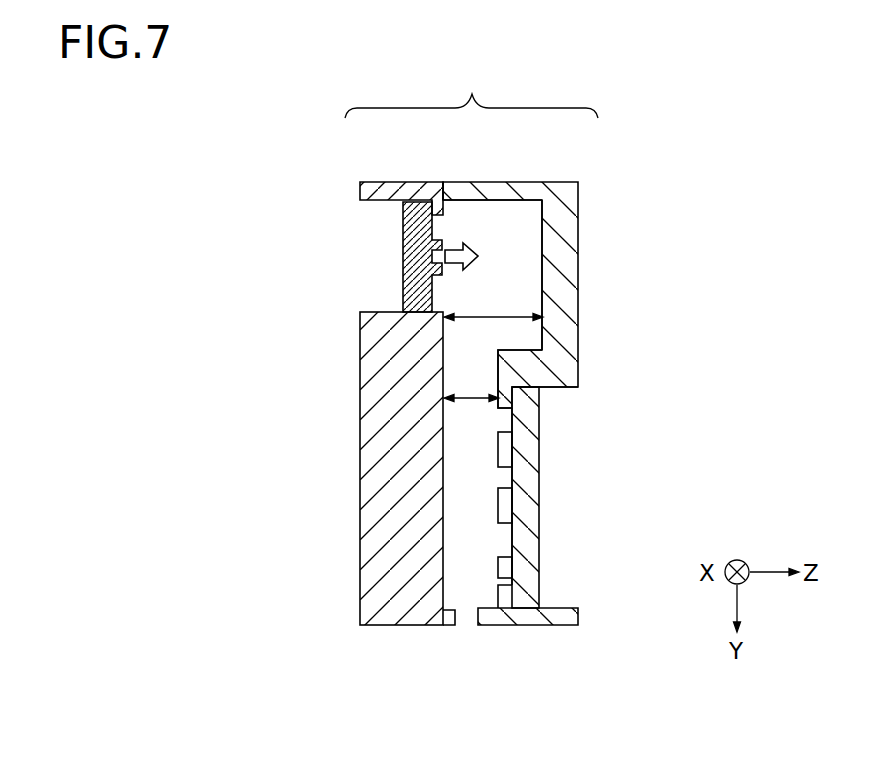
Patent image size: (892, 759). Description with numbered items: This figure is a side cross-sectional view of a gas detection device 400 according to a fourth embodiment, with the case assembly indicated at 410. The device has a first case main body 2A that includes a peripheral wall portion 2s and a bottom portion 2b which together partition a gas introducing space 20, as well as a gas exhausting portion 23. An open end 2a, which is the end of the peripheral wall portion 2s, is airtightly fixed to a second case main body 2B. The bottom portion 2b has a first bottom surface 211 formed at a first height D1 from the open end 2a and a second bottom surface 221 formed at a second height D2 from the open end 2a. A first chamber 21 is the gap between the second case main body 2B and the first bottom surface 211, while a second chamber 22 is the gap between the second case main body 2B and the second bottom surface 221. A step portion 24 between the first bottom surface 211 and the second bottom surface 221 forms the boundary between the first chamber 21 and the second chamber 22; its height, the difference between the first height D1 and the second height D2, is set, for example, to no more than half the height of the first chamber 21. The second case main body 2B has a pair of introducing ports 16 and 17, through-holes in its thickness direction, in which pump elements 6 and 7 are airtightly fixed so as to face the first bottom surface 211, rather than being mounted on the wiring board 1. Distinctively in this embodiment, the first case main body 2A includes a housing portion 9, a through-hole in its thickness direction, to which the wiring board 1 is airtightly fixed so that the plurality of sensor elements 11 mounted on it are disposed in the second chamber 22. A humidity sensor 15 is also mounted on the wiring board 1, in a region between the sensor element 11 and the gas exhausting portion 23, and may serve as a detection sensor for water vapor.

The gas detection device 400 is at (644, 114).
The cover member 410 is at (471, 92).
The second case main body 2B is at (400, 182).
The open end 2a is at (431, 183).
The first case main body 2A is at (517, 182).
The peripheral wall portion 2s is at (510, 295).
The bottom portion 2b is at (579, 296).
The first bottom surface 211 is at (540, 200).
The first chamber 21 is at (507, 285).
The step portion 24 is at (518, 348).
The second bottom surface 221 is at (498, 362).
The pump element 6 is at (403, 247).
The pump element 7 is at (422, 257).
The gas introducing space 20 is at (500, 237).
The introducing port 16 is at (370, 312).
The introducing port 17 is at (401, 468).
The gas exhausting portion 23 is at (458, 619).
The wiring board 1 is at (538, 430).
The second chamber 22 is at (487, 542).
The sensor element 11 is at (498, 447).
The humidity sensor 15 is at (498, 566).
The housing portion 9 is at (563, 607).
The first height D1 is at (493, 307).
The second height D2 is at (471, 386).